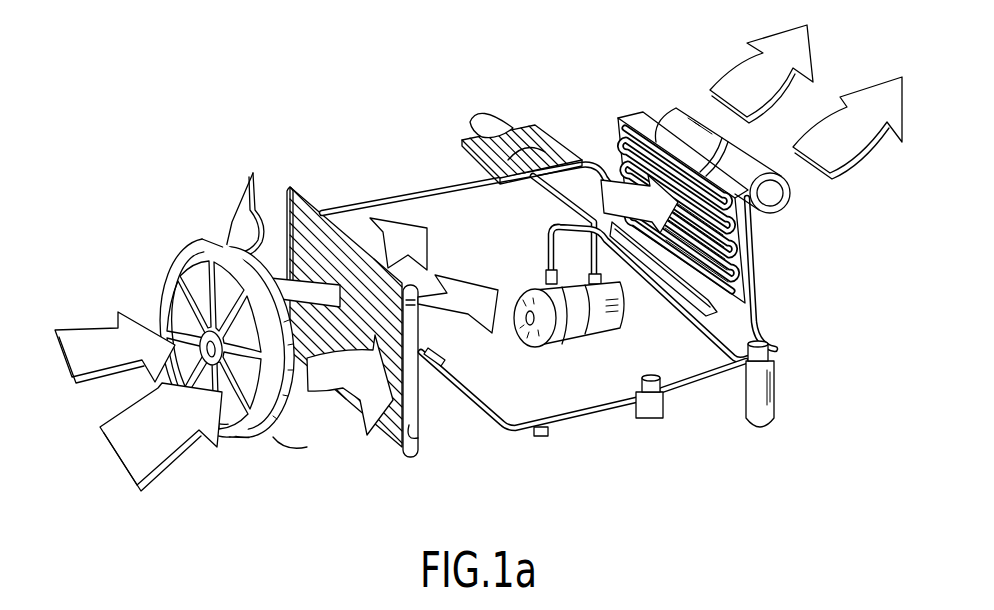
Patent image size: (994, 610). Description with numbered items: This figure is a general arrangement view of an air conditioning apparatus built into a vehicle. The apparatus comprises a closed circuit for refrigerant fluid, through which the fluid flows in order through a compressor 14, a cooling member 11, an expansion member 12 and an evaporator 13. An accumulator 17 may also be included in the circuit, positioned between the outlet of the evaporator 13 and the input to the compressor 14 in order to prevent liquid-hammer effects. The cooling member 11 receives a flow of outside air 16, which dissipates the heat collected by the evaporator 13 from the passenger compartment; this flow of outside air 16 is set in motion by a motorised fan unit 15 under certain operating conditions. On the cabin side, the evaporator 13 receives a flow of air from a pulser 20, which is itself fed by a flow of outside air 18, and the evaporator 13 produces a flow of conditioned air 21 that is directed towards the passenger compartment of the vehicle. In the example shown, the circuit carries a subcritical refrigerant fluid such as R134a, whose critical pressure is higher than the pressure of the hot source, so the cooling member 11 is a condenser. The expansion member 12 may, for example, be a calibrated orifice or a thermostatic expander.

The cooling member 11 is at (417, 458).
The expansion member 12 is at (637, 414).
The evaporator 13 is at (747, 247).
The compressor 14 is at (600, 333).
The motorised fan unit 15 is at (247, 447).
The flow of outside air 16 is at (112, 453).
The accumulator 17 is at (773, 410).
The flow of outside air 18 is at (472, 120).
The pulser 20 is at (560, 127).
The flow of conditioned air 21 is at (723, 80).